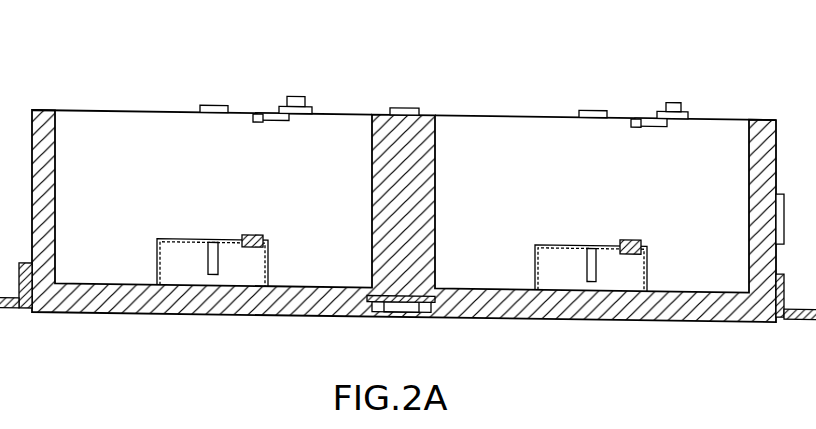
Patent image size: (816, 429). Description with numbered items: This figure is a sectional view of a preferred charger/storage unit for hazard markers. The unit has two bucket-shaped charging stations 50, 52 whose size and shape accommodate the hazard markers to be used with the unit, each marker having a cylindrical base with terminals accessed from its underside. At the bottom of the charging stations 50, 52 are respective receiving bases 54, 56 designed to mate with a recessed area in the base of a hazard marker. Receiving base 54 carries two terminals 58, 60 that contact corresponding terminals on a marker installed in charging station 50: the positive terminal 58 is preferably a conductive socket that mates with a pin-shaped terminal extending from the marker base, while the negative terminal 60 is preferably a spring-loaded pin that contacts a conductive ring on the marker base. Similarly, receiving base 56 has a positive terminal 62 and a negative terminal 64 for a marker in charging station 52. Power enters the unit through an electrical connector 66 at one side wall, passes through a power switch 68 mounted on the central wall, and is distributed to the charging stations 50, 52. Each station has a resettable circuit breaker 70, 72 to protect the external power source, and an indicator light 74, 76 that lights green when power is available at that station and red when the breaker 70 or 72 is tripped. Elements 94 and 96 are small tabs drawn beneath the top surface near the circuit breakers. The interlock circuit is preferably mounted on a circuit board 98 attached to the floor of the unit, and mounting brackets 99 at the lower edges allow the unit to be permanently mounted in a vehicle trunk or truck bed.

The charging station 50 is at (134, 84).
The charging station 52 is at (520, 92).
The receiving base 54 is at (158, 258).
The receiving base 56 is at (548, 268).
The positive terminal 58 is at (212, 258).
The negative terminal 60 is at (260, 237).
The positive terminal 62 is at (590, 263).
The negative terminal 64 is at (638, 242).
The electrical connector 66 is at (777, 195).
The power switch 68 is at (405, 103).
The resettable circuit breaker 70 is at (297, 95).
The resettable circuit breaker 72 is at (674, 103).
The indicator light 74 is at (215, 103).
The indicator light 76 is at (593, 110).
The first tab 94 is at (265, 114).
The second tab 96 is at (636, 120).
The circuit board 98 is at (400, 316).
The mounting brackets 99 is at (10, 310).